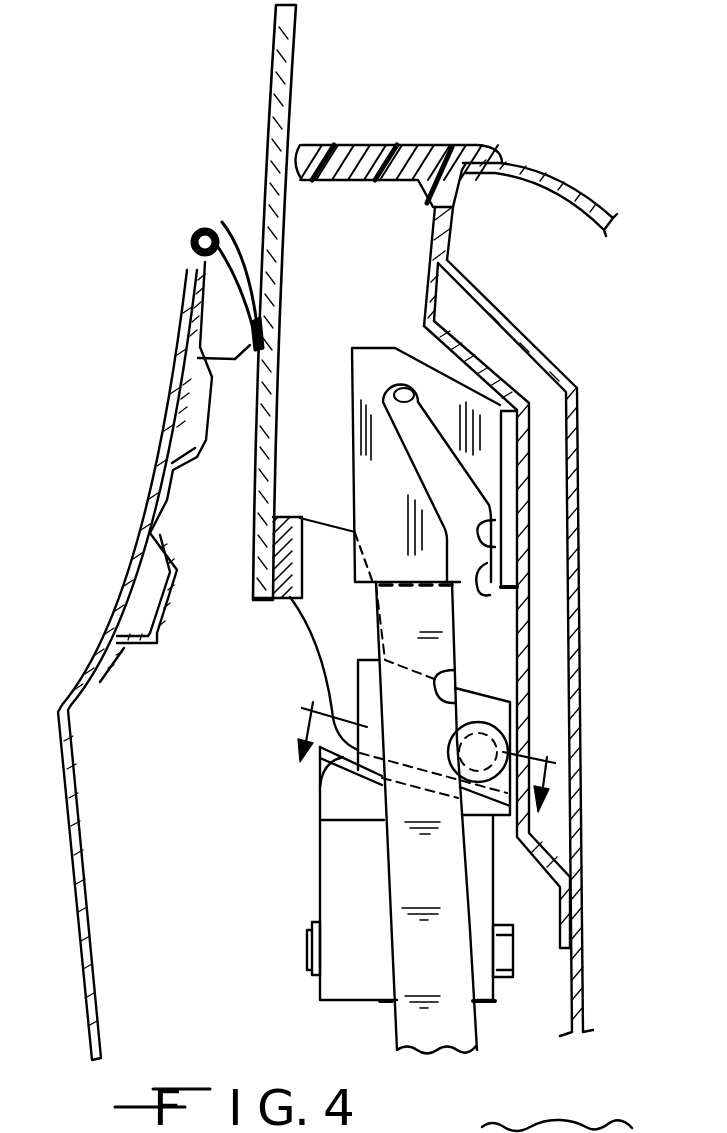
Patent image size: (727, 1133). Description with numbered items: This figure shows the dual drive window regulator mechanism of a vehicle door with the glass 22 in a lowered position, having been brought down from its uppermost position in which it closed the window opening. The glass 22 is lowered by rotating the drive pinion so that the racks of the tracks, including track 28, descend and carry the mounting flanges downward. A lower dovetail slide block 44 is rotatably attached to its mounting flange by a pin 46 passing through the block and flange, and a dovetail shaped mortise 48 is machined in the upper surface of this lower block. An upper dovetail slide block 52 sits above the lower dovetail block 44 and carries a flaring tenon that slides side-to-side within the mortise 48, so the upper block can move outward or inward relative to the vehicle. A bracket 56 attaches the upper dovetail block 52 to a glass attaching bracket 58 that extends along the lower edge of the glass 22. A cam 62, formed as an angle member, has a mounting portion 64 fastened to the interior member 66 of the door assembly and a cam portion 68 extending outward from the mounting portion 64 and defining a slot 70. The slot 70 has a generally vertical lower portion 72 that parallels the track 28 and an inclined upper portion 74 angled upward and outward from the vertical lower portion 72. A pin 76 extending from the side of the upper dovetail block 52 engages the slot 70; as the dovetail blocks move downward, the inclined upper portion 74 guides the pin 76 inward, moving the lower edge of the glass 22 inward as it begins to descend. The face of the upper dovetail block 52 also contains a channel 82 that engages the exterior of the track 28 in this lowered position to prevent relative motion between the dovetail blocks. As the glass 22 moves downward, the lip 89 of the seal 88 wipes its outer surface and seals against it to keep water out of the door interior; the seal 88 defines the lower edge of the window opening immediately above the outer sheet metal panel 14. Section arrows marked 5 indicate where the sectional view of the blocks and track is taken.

The outer sheet metal panel 14 is at (147, 502).
The glass 22 is at (292, 92).
The track 28 is at (380, 1046).
The lower dovetail slide block 44 is at (320, 882).
The pin 46 is at (308, 958).
The mortise 48 is at (318, 797).
The upper dovetail slide block 52 is at (500, 697).
The bracket 56 is at (316, 663).
The glass attaching bracket 58 is at (282, 598).
The cam 62 is at (352, 475).
The mounting portion 64 is at (506, 443).
The interior member 66 is at (530, 575).
The cam portion 68 is at (352, 402).
The slot 70 is at (500, 540).
The vertical lower portion 72 is at (480, 596).
The inclined upper portion 74 is at (395, 385).
The pin 76 is at (510, 752).
The channel 82 is at (452, 670).
The seal 88 is at (192, 240).
The lip 89 is at (242, 236).
The section line 5- 5 is at (410, 775).